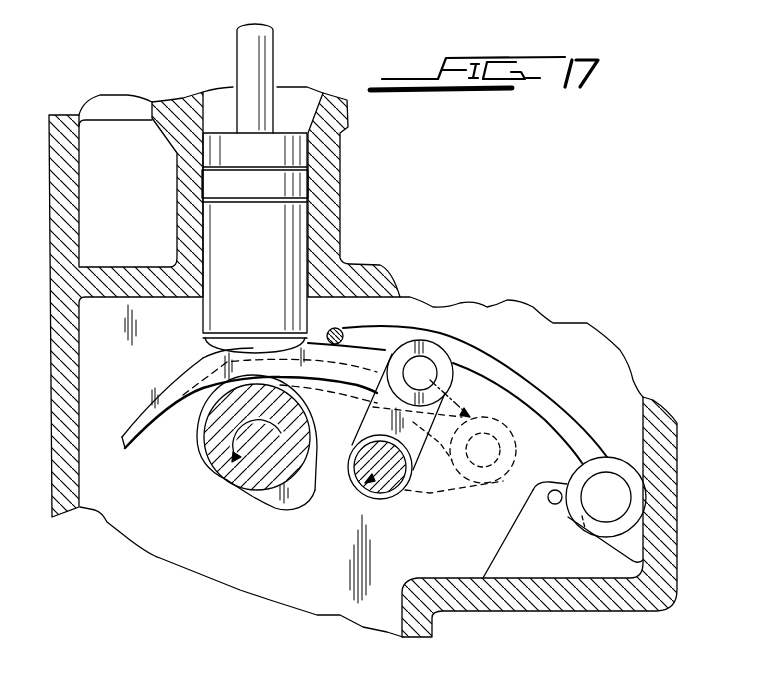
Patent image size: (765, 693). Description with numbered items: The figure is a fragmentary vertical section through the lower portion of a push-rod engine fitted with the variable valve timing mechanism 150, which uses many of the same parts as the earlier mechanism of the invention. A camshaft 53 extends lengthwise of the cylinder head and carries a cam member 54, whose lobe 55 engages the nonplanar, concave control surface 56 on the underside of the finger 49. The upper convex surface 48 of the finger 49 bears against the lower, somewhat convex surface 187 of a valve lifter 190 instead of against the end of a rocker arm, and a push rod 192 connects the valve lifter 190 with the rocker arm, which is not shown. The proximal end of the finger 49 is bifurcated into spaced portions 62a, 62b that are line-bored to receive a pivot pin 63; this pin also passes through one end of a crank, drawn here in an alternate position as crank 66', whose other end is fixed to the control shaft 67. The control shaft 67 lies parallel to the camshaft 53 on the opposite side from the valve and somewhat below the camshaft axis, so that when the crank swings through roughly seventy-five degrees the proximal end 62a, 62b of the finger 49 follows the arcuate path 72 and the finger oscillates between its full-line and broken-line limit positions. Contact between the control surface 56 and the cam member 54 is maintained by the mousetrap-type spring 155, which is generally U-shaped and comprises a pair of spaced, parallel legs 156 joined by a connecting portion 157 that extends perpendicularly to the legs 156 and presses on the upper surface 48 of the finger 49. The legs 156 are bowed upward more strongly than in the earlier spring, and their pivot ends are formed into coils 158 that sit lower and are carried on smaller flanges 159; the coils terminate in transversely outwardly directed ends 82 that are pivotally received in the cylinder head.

The variable valve timing mechanism 150 is at (440, 296).
The push rod 192 is at (273, 63).
The valve lifter 190 is at (320, 240).
The lower convex surface of valve lifter 187 is at (226, 353).
The upper surface of finger 48 is at (166, 377).
The finger 49 is at (136, 394).
The concave control surface 56 is at (168, 414).
The cam member 54 is at (213, 478).
The cam lobe 55 is at (297, 498).
The camshaft 53 is at (281, 461).
The connecting portion 157 is at (338, 327).
The mousetrap-type spring 155 is at (540, 377).
The legs 156 is at (571, 417).
The pivot pin 63 is at (420, 373).
The spaced portion of proximal end 62a is at (446, 347).
The spaced portion of proximal end 62b is at (486, 448).
The arcuate path 72 is at (467, 412).
The control shaft 67 is at (392, 475).
The alternate follower 66' is at (454, 500).
The coils 158 is at (620, 466).
The flanges 159 is at (580, 569).
The outwardly directed ends 82 is at (550, 506).